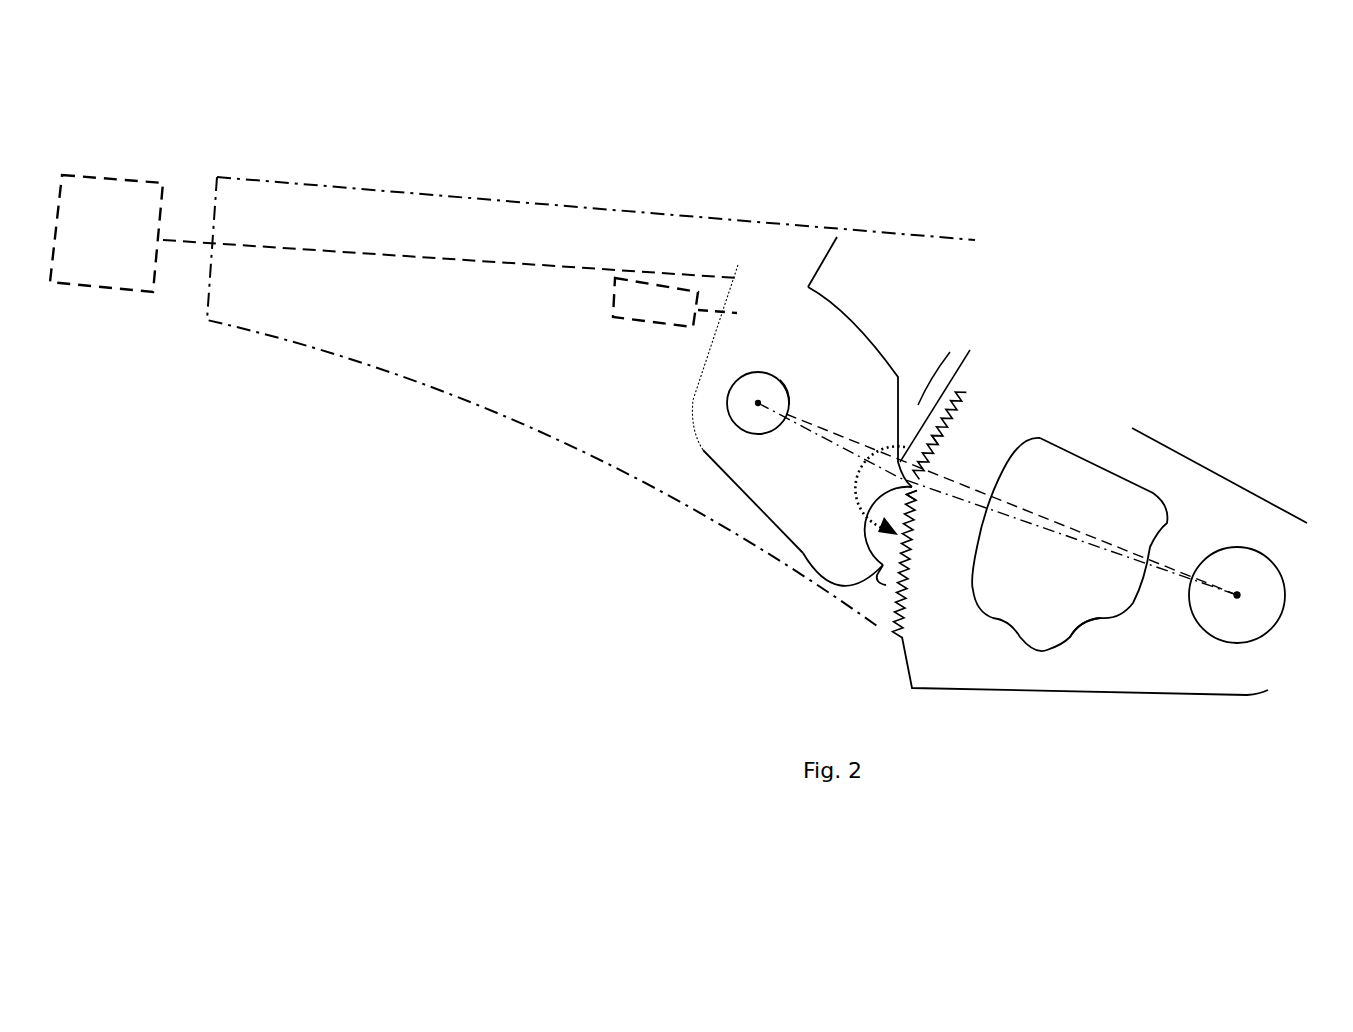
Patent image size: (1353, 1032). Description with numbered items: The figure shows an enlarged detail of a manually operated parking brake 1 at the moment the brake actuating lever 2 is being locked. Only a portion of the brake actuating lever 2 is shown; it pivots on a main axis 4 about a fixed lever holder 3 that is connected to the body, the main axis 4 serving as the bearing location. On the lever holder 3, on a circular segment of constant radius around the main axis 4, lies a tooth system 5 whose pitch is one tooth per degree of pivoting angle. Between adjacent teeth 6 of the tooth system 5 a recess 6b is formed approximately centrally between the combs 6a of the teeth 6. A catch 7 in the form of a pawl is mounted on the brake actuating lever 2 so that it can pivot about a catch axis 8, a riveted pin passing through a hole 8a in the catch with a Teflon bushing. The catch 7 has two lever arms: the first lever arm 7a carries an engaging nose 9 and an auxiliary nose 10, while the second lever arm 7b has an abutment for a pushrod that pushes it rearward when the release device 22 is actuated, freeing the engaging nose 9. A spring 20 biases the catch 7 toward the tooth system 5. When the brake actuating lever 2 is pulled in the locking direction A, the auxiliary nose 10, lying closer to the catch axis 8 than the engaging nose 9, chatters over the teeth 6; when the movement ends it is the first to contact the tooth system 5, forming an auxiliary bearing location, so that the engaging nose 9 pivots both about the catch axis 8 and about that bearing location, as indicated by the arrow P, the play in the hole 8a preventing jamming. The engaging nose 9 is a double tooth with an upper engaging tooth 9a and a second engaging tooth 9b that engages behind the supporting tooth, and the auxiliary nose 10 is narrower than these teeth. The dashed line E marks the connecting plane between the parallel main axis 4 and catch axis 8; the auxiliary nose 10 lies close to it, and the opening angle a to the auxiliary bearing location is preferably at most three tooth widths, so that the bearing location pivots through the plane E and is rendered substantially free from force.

The parking brake 1 is at (1215, 415).
The brake actuating lever 2 is at (737, 517).
The lever holder 3 is at (1157, 645).
The main axis 4 is at (1237, 595).
The tooth system 5 is at (1025, 403).
The teeth 6 is at (937, 431).
The combs 6a is at (925, 459).
The recess 6b is at (912, 486).
The catch 7 is at (788, 498).
The first lever arm 7a is at (797, 530).
The second lever arm 7b is at (803, 255).
The catch axis 8 is at (758, 403).
The hole 8a is at (788, 383).
The engaging nose 9 is at (878, 565).
The upper engaging tooth 9a is at (878, 567).
The second engaging tooth 9b is at (877, 580).
The auxiliary nose 10 is at (943, 397).
The spring 20 is at (675, 302).
The release device 22 is at (106, 233).
The locking direction A is at (935, 370).
The arrow P is at (880, 453).
The connecting plane E is at (1080, 533).
The opening angle a is at (814, 428).